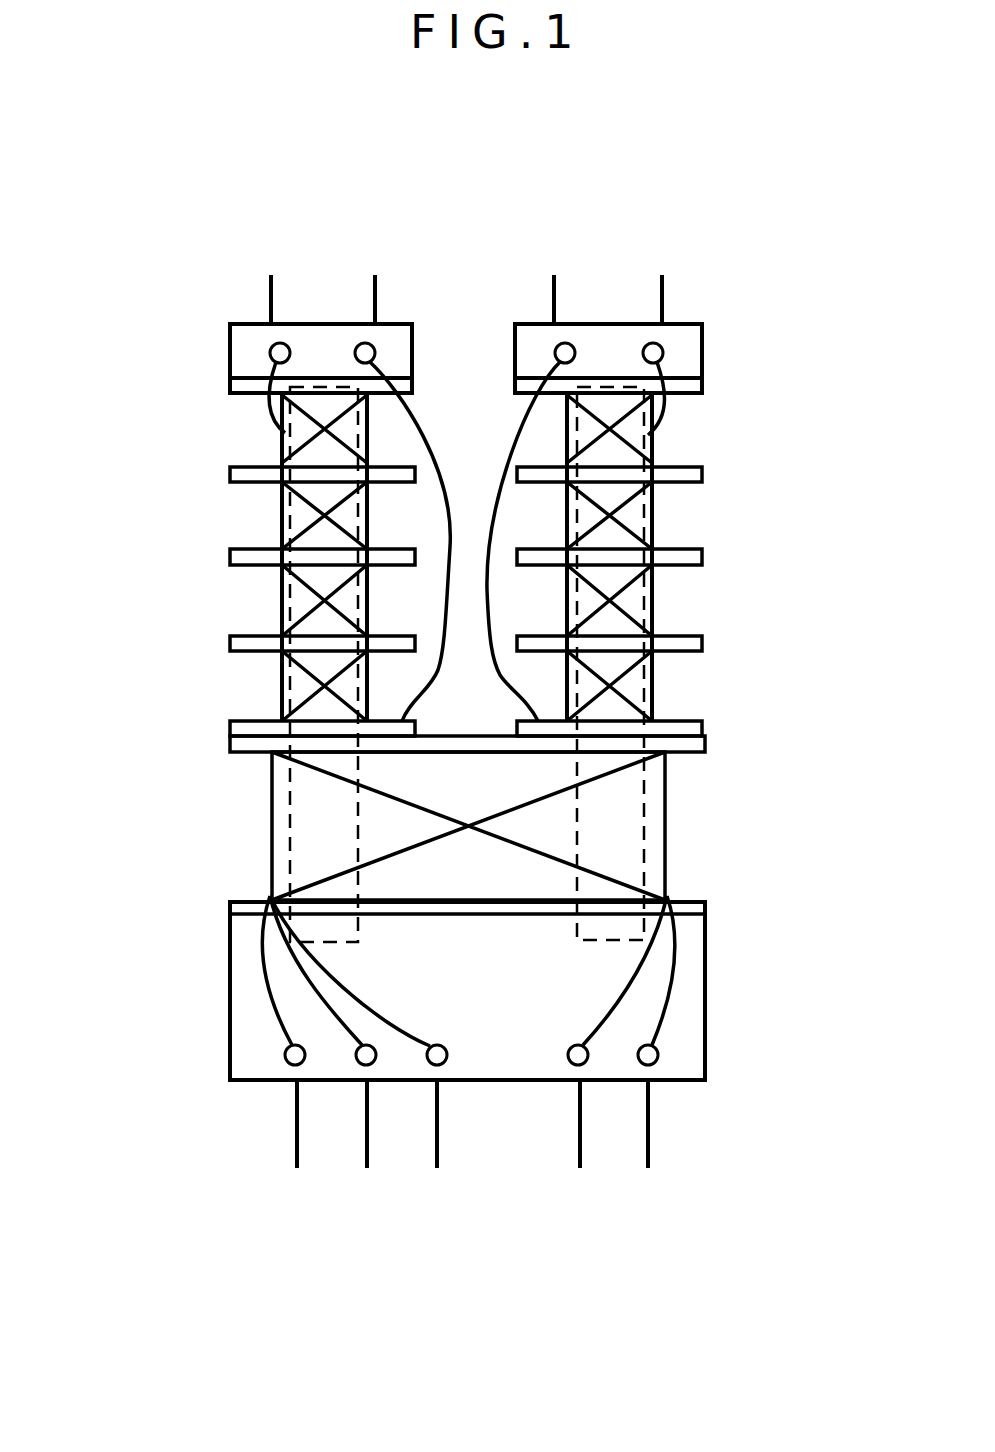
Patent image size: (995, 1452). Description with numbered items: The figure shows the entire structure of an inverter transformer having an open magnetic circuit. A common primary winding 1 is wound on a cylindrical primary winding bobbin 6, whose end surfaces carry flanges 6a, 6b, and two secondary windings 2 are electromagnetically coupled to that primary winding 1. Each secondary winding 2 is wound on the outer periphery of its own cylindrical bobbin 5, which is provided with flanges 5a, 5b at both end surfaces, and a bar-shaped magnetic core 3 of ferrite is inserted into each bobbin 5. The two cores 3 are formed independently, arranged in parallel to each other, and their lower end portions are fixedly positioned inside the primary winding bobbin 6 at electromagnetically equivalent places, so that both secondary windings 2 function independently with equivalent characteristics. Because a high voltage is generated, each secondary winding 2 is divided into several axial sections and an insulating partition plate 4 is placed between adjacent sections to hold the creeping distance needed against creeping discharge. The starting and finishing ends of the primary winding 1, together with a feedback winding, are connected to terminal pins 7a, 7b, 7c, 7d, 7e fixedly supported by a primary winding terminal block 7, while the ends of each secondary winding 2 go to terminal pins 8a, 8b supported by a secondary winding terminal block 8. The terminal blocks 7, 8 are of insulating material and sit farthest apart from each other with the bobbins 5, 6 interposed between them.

The primary winding 1 is at (272, 825).
The secondary winding 2 is at (281, 441).
The bar-shaped magnetic core 3 is at (283, 592).
The insulating partition plate 4 is at (230, 481).
The cylindrical bobbin 5 is at (230, 474).
The flange 5a is at (230, 390).
The flange 5b is at (232, 733).
The primary winding bobbin 6 is at (667, 805).
The flange 6a is at (705, 745).
The flange 6b is at (704, 900).
The primary winding terminal block 7 is at (705, 947).
The terminal pin 7a is at (296, 1147).
The terminal pin 7b is at (366, 1137).
The terminal pin 7c is at (436, 1140).
The terminal pin 7d is at (579, 1140).
The terminal pin 7e is at (649, 1125).
The secondary winding terminal block 8 is at (229, 351).
The terminal pin 8a is at (268, 302).
The terminal pin 8b is at (374, 303).